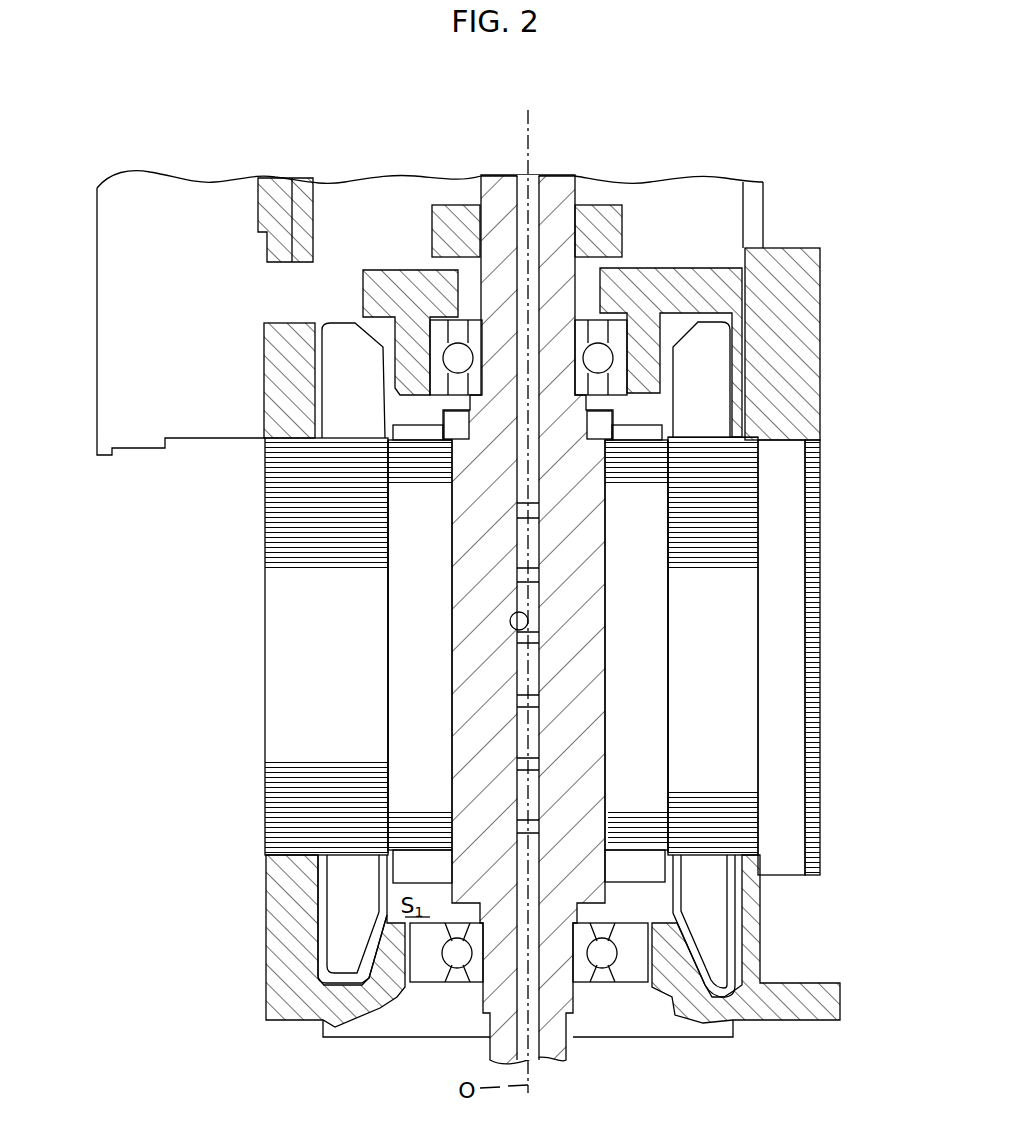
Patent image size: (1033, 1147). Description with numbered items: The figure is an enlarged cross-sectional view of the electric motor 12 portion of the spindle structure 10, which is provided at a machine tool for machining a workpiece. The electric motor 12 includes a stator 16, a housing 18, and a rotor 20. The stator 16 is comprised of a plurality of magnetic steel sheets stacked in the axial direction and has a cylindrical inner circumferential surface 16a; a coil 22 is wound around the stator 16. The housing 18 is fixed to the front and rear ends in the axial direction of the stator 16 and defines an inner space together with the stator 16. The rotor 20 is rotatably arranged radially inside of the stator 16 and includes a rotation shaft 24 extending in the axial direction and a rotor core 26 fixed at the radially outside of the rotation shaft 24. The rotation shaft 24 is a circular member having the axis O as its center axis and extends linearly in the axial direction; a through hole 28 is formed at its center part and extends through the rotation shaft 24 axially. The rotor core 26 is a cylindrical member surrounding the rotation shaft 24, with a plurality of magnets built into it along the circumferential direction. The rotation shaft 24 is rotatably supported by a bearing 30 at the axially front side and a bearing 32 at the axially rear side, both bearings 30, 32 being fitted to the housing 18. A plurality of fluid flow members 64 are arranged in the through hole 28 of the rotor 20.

The spindle structure 10 is at (879, 90).
The electric motor 12 is at (133, 557).
The stator 16 is at (292, 520).
The inner circumferential surface 16a is at (390, 527).
The housing 18 is at (278, 352).
The rotor 20 is at (673, 663).
The coil 22 is at (343, 337).
The rotation shaft 24 is at (470, 717).
The rotor core 26 is at (412, 625).
The through hole 28 is at (490, 655).
The bearing 30 is at (427, 972).
The bearing 32 is at (618, 345).
The fluid flow member 64 is at (540, 505).